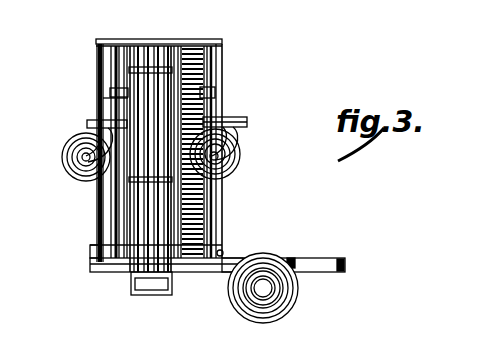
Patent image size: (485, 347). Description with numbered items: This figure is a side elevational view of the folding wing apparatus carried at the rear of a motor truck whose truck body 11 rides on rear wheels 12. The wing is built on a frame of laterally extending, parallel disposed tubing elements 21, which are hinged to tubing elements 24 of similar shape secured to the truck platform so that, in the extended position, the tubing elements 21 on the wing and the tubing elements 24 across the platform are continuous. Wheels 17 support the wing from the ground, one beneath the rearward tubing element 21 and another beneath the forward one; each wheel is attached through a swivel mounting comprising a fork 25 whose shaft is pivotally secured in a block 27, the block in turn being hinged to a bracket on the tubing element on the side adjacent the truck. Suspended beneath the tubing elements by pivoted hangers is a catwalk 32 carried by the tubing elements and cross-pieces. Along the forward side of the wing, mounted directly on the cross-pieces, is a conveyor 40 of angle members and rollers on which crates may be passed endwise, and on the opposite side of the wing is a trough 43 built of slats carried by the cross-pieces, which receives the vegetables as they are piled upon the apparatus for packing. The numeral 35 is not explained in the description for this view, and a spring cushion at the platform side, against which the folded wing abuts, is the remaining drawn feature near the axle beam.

The truck body 11 is at (315, 258).
The rear wheels 12 is at (290, 300).
The wheels 17 is at (63, 160).
The tubing elements 21 is at (110, 62).
The tubing elements 24 is at (113, 256).
The fork 25 is at (235, 148).
The block 27 is at (245, 125).
The catwalk 32 is at (145, 58).
The bolt 35 is at (224, 251).
The conveyor 40 is at (192, 50).
The trough 43 is at (100, 45).